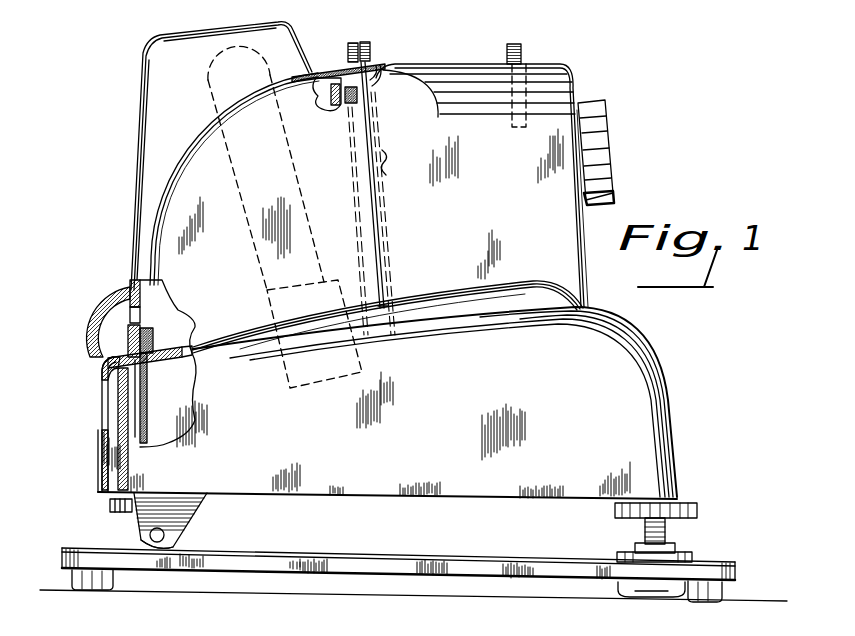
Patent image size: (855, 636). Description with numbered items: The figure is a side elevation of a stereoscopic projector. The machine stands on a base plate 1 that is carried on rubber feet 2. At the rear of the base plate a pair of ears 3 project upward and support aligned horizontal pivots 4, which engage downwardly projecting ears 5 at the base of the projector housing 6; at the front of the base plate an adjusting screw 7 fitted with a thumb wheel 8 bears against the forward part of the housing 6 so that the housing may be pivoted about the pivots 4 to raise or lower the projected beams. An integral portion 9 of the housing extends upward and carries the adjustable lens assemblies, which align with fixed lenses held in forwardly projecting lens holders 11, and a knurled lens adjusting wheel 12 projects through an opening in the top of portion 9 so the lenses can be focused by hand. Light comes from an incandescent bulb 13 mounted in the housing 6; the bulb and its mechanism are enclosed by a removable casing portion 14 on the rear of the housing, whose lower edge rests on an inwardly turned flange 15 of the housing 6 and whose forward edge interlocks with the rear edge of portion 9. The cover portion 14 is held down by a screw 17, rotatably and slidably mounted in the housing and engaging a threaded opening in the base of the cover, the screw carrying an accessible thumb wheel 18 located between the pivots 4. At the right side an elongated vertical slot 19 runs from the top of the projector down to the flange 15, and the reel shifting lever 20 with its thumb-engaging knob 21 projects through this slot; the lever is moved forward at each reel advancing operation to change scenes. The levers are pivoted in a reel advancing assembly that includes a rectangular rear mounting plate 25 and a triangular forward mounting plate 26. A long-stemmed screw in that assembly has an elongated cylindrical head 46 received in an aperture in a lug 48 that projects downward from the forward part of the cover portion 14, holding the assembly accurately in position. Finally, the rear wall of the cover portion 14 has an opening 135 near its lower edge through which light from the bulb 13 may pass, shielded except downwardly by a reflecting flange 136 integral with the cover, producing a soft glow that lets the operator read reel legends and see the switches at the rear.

The base plate 1 is at (398, 570).
The rubber feet 2 is at (99, 578).
The ears 3 is at (141, 548).
The pivots 4 is at (165, 532).
The ears 5 is at (190, 513).
The housing 6 is at (625, 412).
The adjusting screw 7 is at (667, 529).
The thumb wheel 8 is at (680, 510).
The integral portion of the housing 9 is at (549, 99).
The lens holders 11 is at (593, 138).
The knurled lens adjusting wheel 12 is at (519, 50).
The incandescent bulb 13 is at (248, 72).
The removable casing portion 14 is at (148, 203).
The inwardly turned flange 15 is at (185, 350).
The screw 17 is at (142, 409).
The thumb wheel 18 is at (110, 506).
The vertical slot 19 is at (382, 300).
The reel shifting lever 20 is at (368, 140).
The thumb-engaging knob 21 is at (368, 44).
The rectangular rear mounting plate 25 is at (344, 72).
The triangular forward mounting plate 26 is at (381, 68).
The cylindrical head 46 is at (337, 108).
The lug 48 is at (328, 80).
The opening 135 is at (139, 312).
The reflecting flange 136 is at (107, 312).